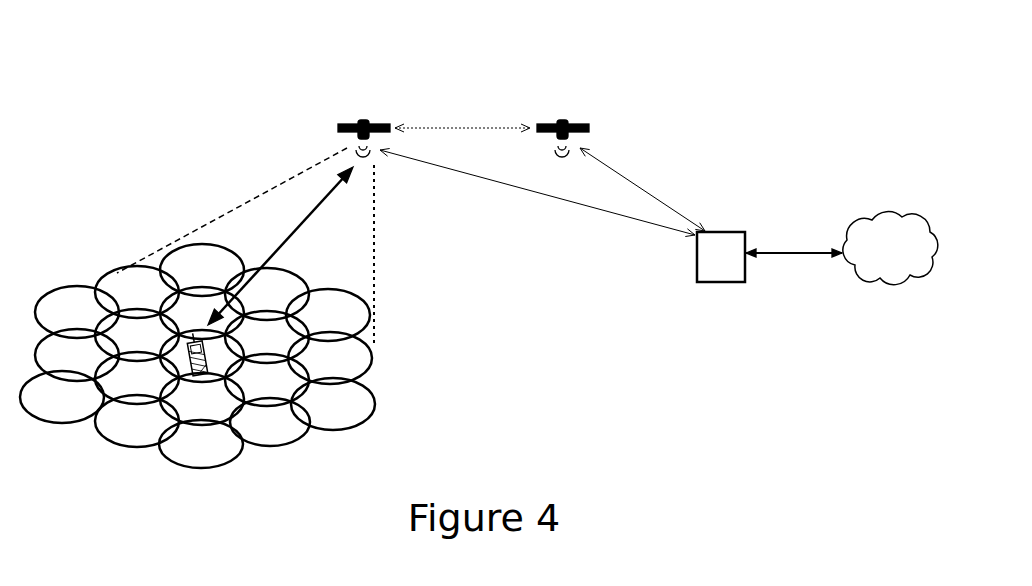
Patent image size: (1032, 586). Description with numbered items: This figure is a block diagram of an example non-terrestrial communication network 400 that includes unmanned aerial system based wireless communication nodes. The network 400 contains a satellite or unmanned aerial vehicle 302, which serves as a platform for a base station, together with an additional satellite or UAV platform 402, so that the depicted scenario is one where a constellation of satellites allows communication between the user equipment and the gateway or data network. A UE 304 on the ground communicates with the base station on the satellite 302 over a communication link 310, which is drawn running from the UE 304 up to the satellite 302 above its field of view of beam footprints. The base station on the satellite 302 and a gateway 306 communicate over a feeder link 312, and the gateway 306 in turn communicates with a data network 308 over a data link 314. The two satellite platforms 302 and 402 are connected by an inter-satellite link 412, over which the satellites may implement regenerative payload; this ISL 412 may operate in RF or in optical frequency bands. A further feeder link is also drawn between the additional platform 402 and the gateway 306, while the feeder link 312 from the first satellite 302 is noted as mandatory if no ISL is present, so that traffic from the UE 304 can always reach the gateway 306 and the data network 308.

The satellite or unmanned aerial vehicle 302 is at (395, 85).
The additional satellite or UAV platform 402 is at (615, 83).
The inter-satellite link 412 is at (493, 128).
The communication link 310 is at (306, 216).
The UE 304 is at (199, 330).
The gateway 306 is at (738, 207).
The data link 314 is at (808, 250).
The data network 308 is at (903, 207).
The feeder link 312 is at (587, 208).
The non-terrestrial communication network 400 is at (527, 395).